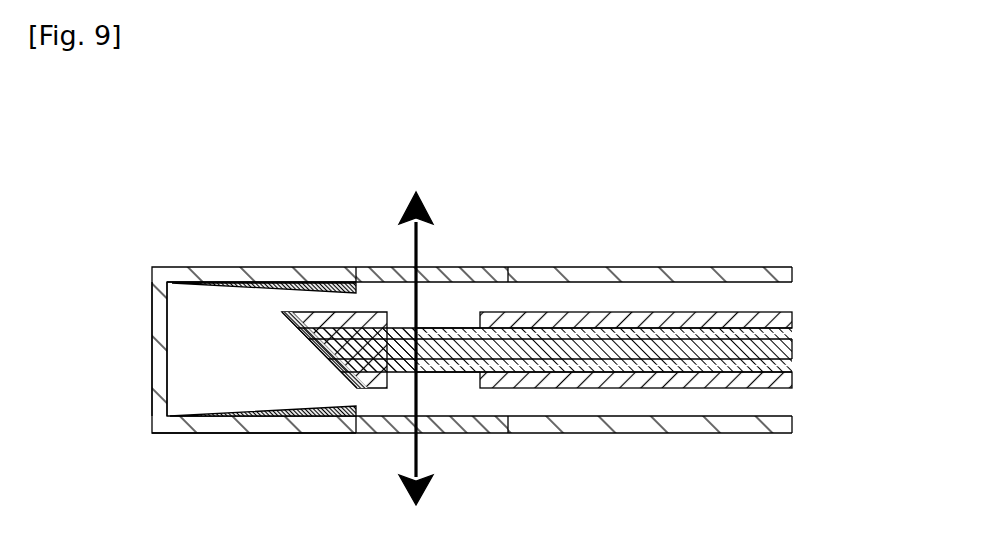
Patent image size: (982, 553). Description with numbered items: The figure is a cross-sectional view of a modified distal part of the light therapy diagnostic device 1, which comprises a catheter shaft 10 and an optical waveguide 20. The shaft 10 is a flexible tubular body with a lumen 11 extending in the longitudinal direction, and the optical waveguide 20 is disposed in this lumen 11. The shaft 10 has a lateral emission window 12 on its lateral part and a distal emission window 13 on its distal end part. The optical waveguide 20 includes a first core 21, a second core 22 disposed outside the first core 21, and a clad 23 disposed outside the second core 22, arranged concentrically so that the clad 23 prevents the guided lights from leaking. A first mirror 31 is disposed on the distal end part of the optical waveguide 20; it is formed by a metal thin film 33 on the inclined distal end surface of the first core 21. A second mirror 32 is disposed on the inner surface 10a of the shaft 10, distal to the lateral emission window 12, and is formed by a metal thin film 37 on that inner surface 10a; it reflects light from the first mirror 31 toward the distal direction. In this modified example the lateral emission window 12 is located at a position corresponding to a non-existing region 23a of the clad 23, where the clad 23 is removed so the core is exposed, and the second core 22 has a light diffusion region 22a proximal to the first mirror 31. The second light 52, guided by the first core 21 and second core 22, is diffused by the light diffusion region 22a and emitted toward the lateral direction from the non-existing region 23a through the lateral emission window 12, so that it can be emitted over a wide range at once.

The light therapy diagnostic device 1 is at (433, 331).
The catheter shaft 10 is at (728, 280).
The inner surface of the shaft 10a is at (176, 285).
The lumen 11 is at (205, 372).
The lateral emission window 12 is at (500, 272).
The distal emission window 13 is at (157, 345).
The optical waveguide 20 is at (545, 281).
The first core 21 is at (543, 328).
The second core 22 is at (703, 227).
The light diffusion region 22a is at (427, 329).
The clad 23 is at (658, 318).
The non-existing region of the clad 23a is at (442, 382).
The first mirror 31 is at (370, 386).
The second mirror 32 is at (238, 287).
The metal thin film 33 is at (349, 386).
The metal thin film 37 is at (285, 420).
The second light 52 is at (413, 260).